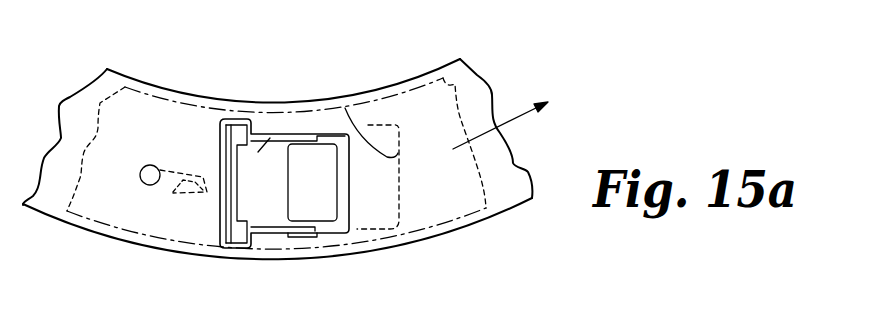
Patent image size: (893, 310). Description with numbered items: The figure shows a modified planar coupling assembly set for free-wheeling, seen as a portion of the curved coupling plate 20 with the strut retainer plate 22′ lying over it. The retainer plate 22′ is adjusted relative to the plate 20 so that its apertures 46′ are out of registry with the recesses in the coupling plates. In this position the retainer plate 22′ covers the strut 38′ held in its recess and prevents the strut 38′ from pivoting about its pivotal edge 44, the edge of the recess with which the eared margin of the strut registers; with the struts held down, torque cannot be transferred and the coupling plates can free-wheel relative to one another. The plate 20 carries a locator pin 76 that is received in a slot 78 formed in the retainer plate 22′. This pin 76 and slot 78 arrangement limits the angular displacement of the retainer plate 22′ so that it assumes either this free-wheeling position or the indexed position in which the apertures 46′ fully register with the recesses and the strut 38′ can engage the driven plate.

The driving coupling plate 20 is at (507, 189).
The strut retainer plate 22′ is at (472, 80).
The pivotal edge of recess 44 is at (220, 152).
The strut 38′ is at (286, 228).
The aperture 46′ is at (345, 108).
The locator pin 76 is at (152, 185).
The slot 78 is at (200, 193).